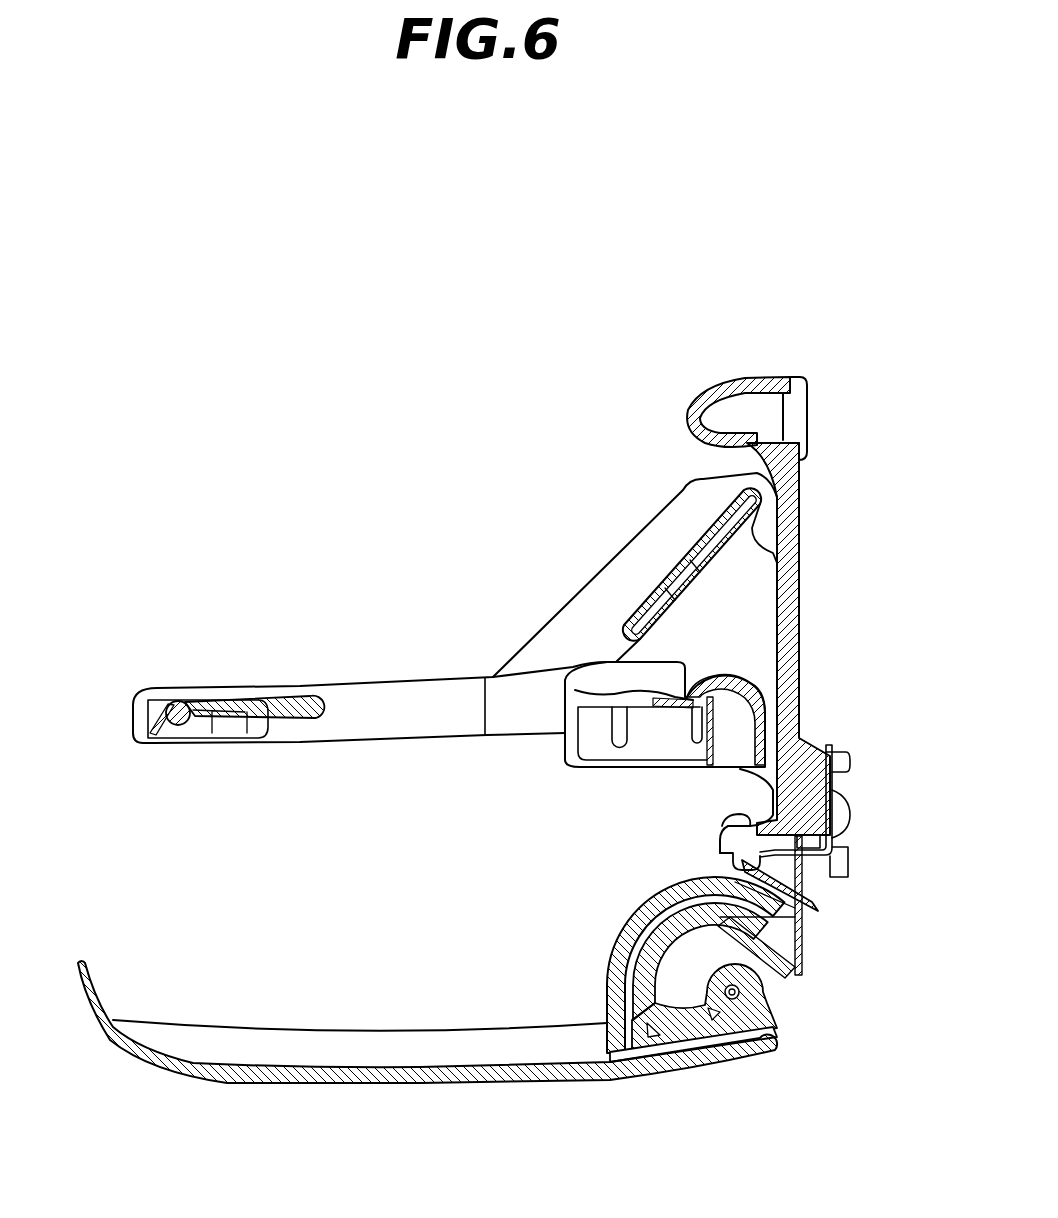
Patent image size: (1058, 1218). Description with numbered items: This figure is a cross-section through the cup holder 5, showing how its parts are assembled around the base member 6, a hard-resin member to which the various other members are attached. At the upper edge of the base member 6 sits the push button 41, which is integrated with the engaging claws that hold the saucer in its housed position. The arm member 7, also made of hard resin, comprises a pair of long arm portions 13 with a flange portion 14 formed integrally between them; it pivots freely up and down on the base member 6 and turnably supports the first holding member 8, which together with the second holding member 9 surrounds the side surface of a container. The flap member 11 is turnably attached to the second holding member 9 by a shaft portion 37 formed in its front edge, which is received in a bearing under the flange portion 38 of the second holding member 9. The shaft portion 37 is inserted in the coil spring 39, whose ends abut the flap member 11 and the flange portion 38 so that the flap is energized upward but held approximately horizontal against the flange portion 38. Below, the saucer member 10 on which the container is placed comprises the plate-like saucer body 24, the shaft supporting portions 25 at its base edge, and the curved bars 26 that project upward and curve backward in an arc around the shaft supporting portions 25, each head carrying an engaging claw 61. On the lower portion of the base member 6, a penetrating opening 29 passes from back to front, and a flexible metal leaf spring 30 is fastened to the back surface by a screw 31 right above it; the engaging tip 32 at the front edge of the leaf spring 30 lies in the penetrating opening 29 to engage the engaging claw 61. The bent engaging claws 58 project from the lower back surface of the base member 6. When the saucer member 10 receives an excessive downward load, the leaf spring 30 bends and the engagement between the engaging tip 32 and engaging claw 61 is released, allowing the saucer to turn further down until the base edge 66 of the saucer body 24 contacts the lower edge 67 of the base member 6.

The cup holder 5 is at (372, 394).
The base member 6 is at (802, 590).
The arm member 7 is at (542, 624).
The first holding member 8 is at (716, 674).
The second holding member 9 is at (372, 679).
The saucer member 10 is at (300, 1082).
The flap member 11 is at (248, 698).
The arm portion 13 is at (645, 537).
The flange portion 14 is at (640, 592).
The saucer body 24 is at (388, 1028).
The shaft supporting portion 25 is at (765, 1018).
The curved bar 26 is at (614, 955).
The penetrating opening 29 is at (722, 865).
The leaf spring 30 is at (840, 780).
The screw 31 is at (845, 815).
The engaging tip 32 is at (727, 832).
The shaft portion 37 is at (178, 698).
The flange portion 38 is at (207, 692).
The coil spring 39 is at (155, 745).
The push button 41 is at (752, 374).
The engaging claw 58 is at (852, 852).
The engaging claw 61 is at (802, 883).
The base edge 66 is at (785, 1035).
The lower edge 67 is at (803, 977).